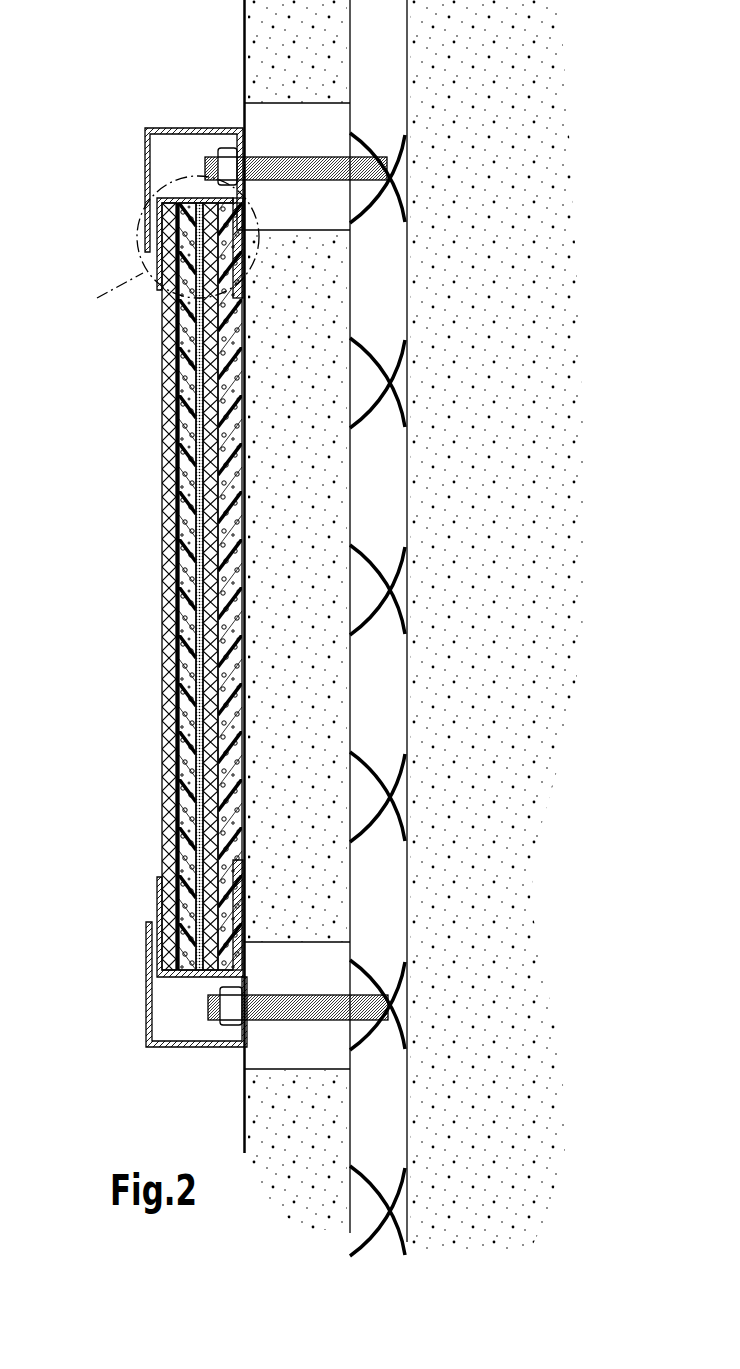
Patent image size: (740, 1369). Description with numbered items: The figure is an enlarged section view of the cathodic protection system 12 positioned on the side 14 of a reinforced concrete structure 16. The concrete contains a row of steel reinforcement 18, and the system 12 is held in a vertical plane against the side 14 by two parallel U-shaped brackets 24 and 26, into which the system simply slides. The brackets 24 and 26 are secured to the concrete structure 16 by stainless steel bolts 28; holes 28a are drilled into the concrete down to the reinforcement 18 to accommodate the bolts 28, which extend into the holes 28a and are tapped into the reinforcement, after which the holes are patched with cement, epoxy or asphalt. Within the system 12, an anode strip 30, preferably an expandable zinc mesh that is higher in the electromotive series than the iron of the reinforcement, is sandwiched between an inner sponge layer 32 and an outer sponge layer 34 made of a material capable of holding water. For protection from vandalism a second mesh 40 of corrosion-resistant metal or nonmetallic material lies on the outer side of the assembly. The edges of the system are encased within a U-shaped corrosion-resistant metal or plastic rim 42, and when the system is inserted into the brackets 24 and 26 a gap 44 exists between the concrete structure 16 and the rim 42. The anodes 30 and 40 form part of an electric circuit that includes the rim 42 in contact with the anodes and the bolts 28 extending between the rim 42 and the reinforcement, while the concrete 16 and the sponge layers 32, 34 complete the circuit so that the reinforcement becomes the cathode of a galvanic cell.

The cathodic protection system 12 is at (165, 576).
The side 14 is at (248, 738).
The reinforced concrete structure 16 is at (328, 482).
The row of steel reinforcement 18 is at (380, 887).
The U-shaped bracket 24 is at (145, 153).
The U-shaped bracket 26 is at (147, 1003).
The stainless steel bolt 28 is at (300, 157).
The hole 28a is at (310, 970).
The anode strip 30 is at (187, 797).
The inner sponge layer 32 is at (213, 634).
The outer sponge layer 34 is at (187, 682).
The second mesh 40 is at (170, 558).
The rim 42 is at (156, 290).
The gap 44 is at (243, 268).